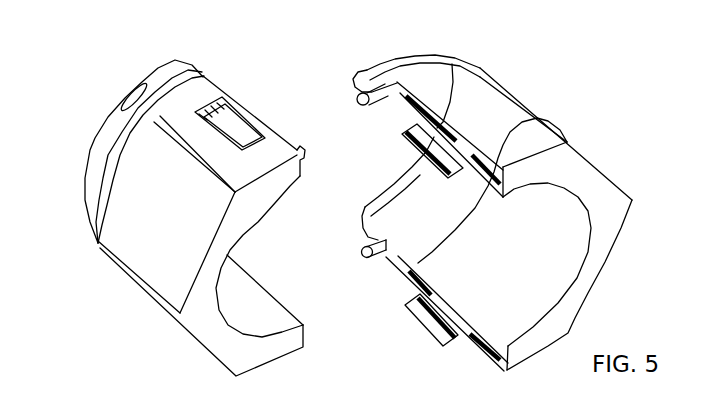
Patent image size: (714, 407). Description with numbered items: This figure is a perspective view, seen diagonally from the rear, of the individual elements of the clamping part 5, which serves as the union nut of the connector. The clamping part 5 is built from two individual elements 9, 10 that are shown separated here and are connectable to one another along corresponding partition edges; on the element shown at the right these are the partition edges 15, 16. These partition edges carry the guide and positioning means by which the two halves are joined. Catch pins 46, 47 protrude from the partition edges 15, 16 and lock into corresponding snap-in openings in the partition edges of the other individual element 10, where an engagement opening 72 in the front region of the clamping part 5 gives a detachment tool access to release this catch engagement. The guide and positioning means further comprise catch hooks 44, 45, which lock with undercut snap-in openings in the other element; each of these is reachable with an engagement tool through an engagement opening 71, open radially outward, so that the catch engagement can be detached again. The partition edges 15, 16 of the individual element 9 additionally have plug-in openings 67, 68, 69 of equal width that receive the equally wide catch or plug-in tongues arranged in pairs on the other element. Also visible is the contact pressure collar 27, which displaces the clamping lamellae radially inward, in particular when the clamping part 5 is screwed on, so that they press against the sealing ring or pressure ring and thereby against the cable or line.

The clamping part 5 is at (345, 212).
The individual element 10 is at (179, 211).
The individual element 9 is at (477, 212).
The engagement opening 72 is at (125, 79).
The engagement opening 71 is at (233, 131).
The contact pressure collar 27 is at (250, 278).
The catch pin 46 is at (352, 76).
The catch pin 47 is at (373, 268).
The plug-in opening 68 is at (402, 84).
The catch hook 44 is at (402, 141).
The catch hook 45 is at (425, 328).
The plug-in opening 69 is at (487, 352).
The partition edge 16 is at (496, 362).
The partition edge 15 is at (452, 64).
The plug-in opening 67 is at (545, 116).